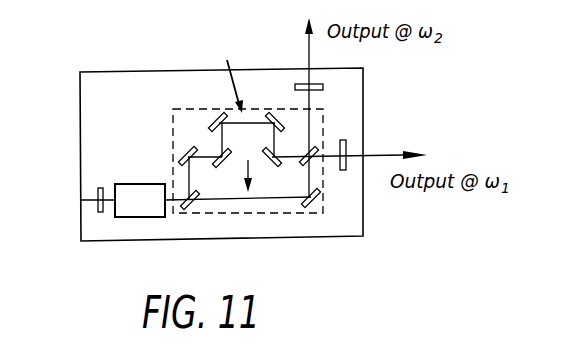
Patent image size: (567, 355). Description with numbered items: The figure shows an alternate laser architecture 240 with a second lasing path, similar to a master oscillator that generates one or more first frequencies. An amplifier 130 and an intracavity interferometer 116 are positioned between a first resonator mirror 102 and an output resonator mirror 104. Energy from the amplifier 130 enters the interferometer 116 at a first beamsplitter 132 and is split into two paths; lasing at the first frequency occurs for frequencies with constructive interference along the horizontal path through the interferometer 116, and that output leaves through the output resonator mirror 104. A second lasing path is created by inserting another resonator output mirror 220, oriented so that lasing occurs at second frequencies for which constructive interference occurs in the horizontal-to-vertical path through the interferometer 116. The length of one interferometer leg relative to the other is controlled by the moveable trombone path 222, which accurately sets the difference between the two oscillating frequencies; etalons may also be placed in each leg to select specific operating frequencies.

The laser architecture 240 is at (97, 72).
The trombone path 222 is at (248, 110).
The resonator output mirror 220 is at (323, 87).
The interferometer 116 is at (302, 168).
The output resonator mirror 104 is at (343, 148).
The amplifier 130 is at (124, 184).
The first resonator mirror 102 is at (80, 200).
The first beamsplitter 132 is at (193, 202).